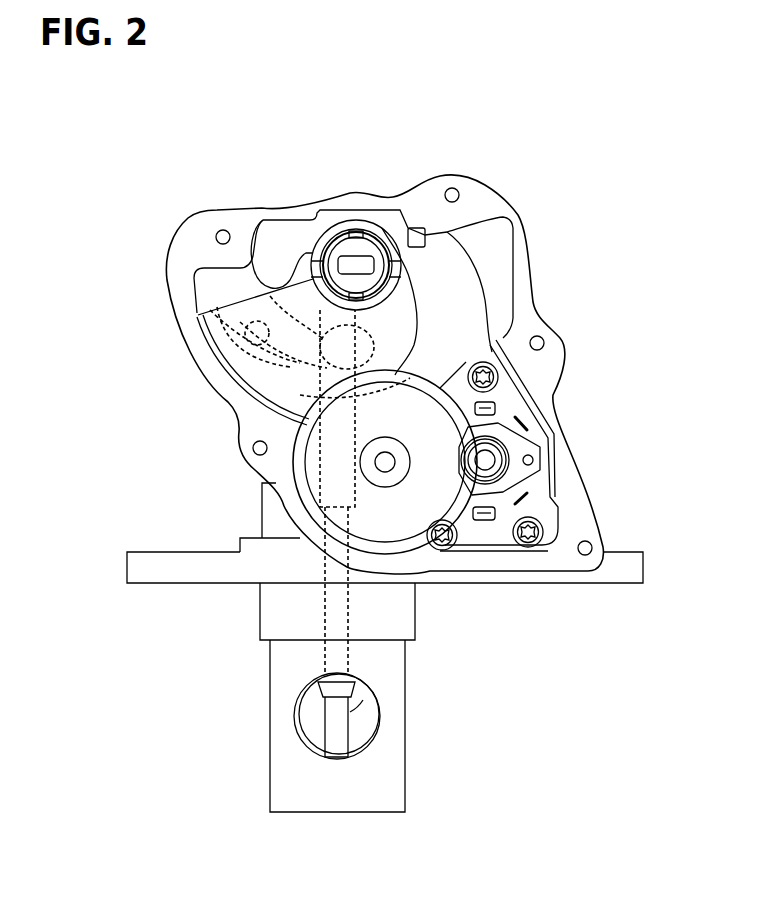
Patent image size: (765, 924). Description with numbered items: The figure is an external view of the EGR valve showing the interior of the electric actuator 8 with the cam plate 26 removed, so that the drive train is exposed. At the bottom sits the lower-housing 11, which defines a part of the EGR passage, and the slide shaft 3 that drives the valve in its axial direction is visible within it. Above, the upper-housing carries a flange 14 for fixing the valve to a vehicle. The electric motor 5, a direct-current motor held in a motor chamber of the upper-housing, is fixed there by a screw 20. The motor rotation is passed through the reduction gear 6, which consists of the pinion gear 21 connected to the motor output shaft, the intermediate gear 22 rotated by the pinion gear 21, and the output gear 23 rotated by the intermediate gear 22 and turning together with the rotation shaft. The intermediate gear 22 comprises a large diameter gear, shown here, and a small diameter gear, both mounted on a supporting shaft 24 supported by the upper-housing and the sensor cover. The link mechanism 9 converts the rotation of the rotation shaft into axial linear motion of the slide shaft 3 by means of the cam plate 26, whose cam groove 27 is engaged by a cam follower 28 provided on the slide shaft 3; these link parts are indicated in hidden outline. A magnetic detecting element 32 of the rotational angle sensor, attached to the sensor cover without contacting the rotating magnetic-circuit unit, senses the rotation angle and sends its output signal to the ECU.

The slide shaft 3 is at (332, 728).
The electric motor 5 is at (500, 418).
The reduction gear 6 is at (462, 518).
The electric actuator 8 is at (498, 338).
The link mechanism 9 is at (250, 291).
The lower-housing 11 is at (285, 775).
The flange 14 is at (177, 562).
The screw 20 is at (492, 372).
The pinion gear 21 is at (496, 459).
The intermediate gear 22 is at (306, 461).
The output gear 23 is at (257, 382).
The supporting shaft 24 is at (380, 465).
The cam plate 26 is at (268, 255).
The cam groove 27 is at (300, 343).
The cam follower 28 is at (300, 362).
The magnetic detecting element 32 is at (372, 242).